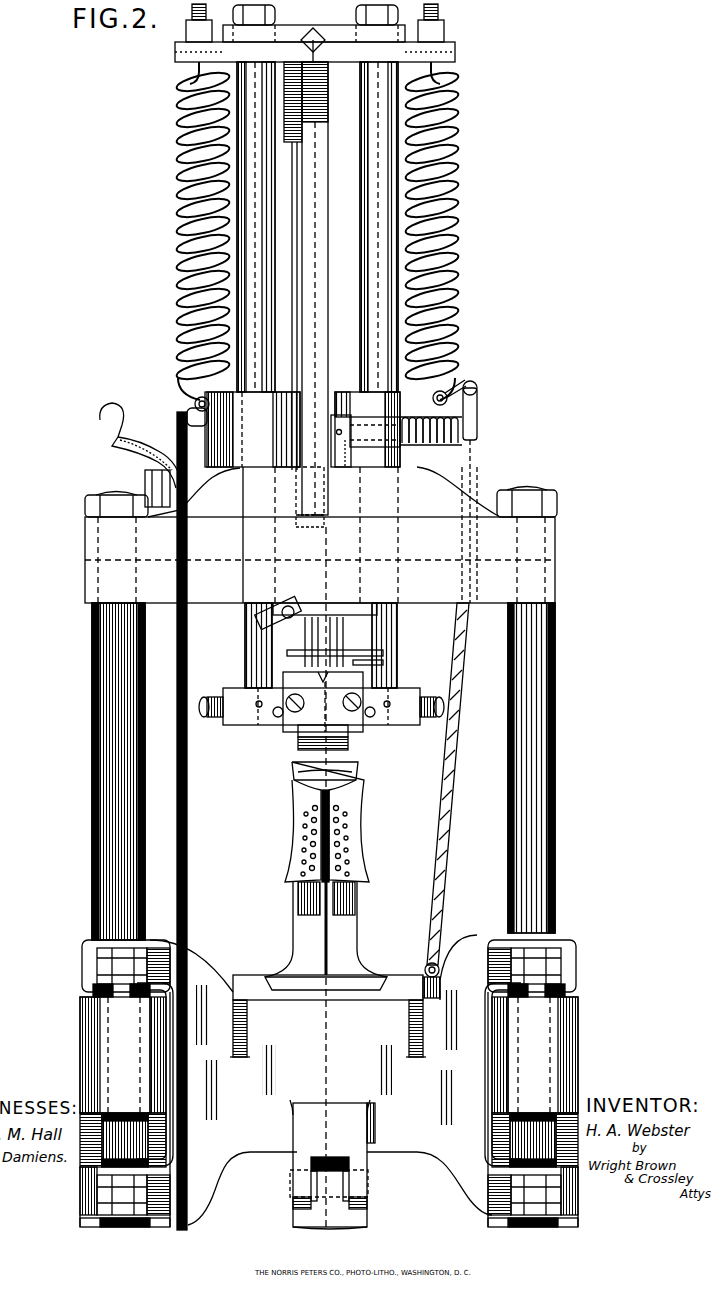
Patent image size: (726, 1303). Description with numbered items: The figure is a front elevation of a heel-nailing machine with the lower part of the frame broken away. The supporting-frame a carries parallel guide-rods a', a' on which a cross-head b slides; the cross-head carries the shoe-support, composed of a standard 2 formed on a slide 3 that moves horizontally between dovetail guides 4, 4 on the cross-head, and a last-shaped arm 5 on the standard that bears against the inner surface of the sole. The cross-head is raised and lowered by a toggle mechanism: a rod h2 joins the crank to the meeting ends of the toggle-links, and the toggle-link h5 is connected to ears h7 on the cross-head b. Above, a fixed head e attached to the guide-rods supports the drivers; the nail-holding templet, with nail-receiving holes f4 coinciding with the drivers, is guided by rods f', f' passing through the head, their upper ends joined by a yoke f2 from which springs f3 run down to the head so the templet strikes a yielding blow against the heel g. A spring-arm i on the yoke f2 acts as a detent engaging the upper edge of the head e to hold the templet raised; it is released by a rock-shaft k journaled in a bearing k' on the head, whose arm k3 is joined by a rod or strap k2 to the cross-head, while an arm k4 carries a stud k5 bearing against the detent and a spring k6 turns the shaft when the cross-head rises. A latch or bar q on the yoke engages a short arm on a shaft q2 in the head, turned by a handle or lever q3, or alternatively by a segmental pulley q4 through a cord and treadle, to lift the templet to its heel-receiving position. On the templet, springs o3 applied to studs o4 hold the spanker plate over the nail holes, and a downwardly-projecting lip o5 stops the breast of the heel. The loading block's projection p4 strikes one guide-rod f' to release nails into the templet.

The arm or last-shaped piece 5 is at (314, 612).
The bar or yoke f2 is at (326, 42).
The springs f3 is at (180, 201).
The spring-arm i is at (317, 283).
The latch or bar q is at (291, 266).
The ear or bearing k' is at (302, 407).
The spring k6 is at (460, 383).
The arm k3 is at (478, 413).
The rock-shaft k is at (453, 435).
The head e is at (432, 515).
The handle or lever q3 is at (112, 440).
The segmental pulley q4 is at (176, 440).
The shaft q2 is at (147, 487).
The stud k5 is at (300, 470).
The arm k4 is at (340, 468).
The rod h2 is at (328, 608).
The rods f' is at (305, 414).
The nail-receiving holes f4 is at (420, 634).
The arm or projection p4 is at (390, 660).
The springs o3 is at (215, 698).
The studs o4 is at (204, 717).
The downwardly-projecting lip o5 is at (323, 727).
The heel g is at (303, 742).
The rod or strap k2 is at (453, 712).
The guide-rods a' is at (316, 771).
The standard 2 is at (322, 892).
The slide 3 is at (355, 982).
The dovetail guides 4 is at (270, 988).
The supporting-frame a is at (318, 1083).
The cross-head b is at (321, 1080).
The ears h7 is at (360, 1156).
The toggle-link h5 is at (360, 1215).